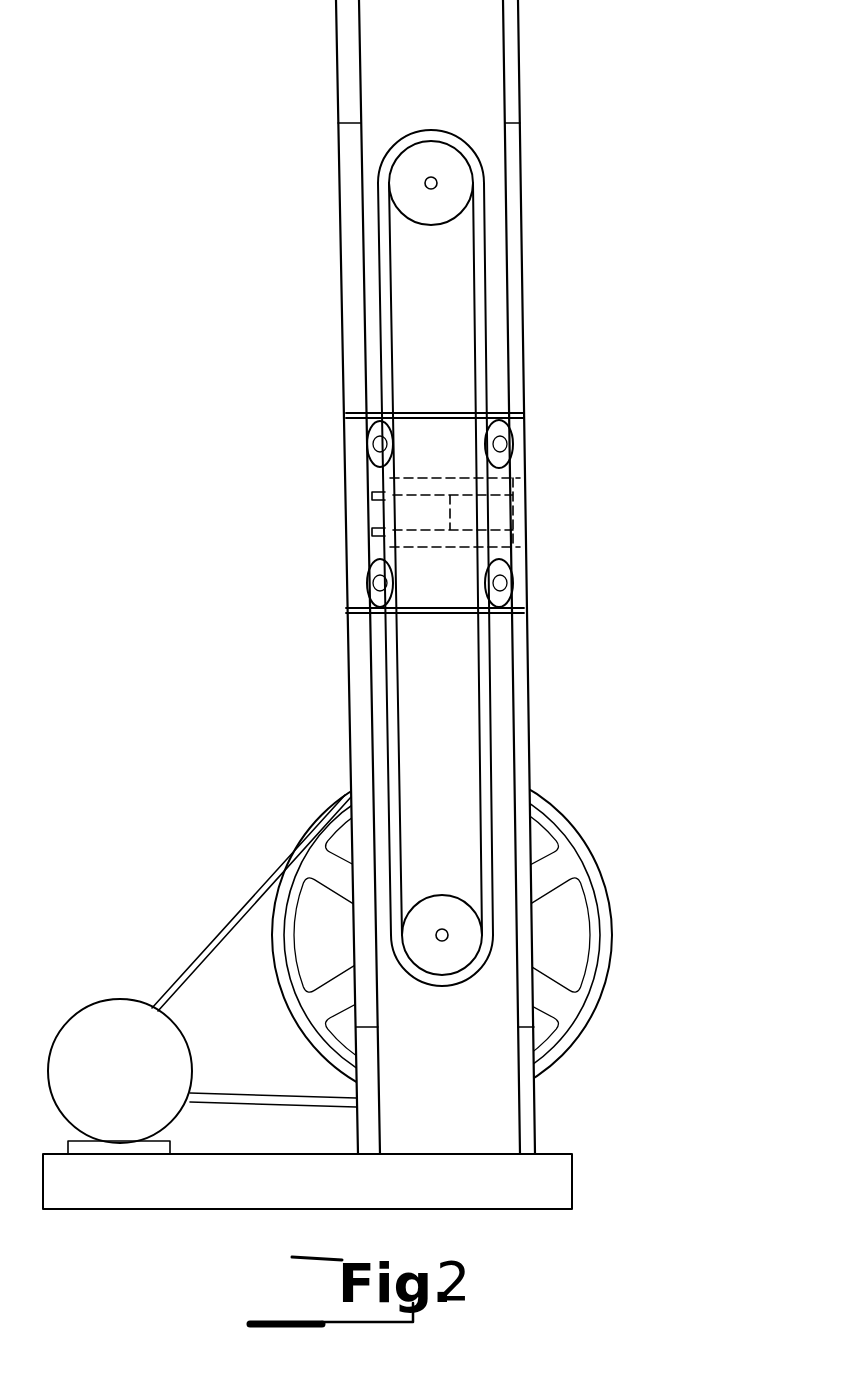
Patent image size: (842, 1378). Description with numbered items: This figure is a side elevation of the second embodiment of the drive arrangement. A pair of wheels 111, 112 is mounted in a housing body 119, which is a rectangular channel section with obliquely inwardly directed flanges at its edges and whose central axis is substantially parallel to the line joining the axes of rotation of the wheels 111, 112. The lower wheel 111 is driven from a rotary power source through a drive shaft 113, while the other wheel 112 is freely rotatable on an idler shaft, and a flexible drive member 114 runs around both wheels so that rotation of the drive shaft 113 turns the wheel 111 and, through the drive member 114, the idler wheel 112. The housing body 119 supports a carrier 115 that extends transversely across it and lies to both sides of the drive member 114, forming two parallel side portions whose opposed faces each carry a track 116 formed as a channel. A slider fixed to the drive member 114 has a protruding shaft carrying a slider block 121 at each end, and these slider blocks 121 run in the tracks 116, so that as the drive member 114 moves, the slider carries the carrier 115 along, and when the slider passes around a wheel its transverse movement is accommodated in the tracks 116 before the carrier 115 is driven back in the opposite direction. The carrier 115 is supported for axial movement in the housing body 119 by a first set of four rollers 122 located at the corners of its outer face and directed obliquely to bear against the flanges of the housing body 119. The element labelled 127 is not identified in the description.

The wheel 111 is at (468, 925).
The wheel 112 is at (455, 202).
The drive shaft 113 is at (447, 938).
The drive member 114 is at (490, 738).
The carrier 115 is at (523, 475).
The track 116 is at (373, 531).
The housing body 119 is at (523, 300).
The slider block 121 is at (517, 512).
The rollers 122 is at (370, 425).
The drive wheel 127 is at (583, 1020).